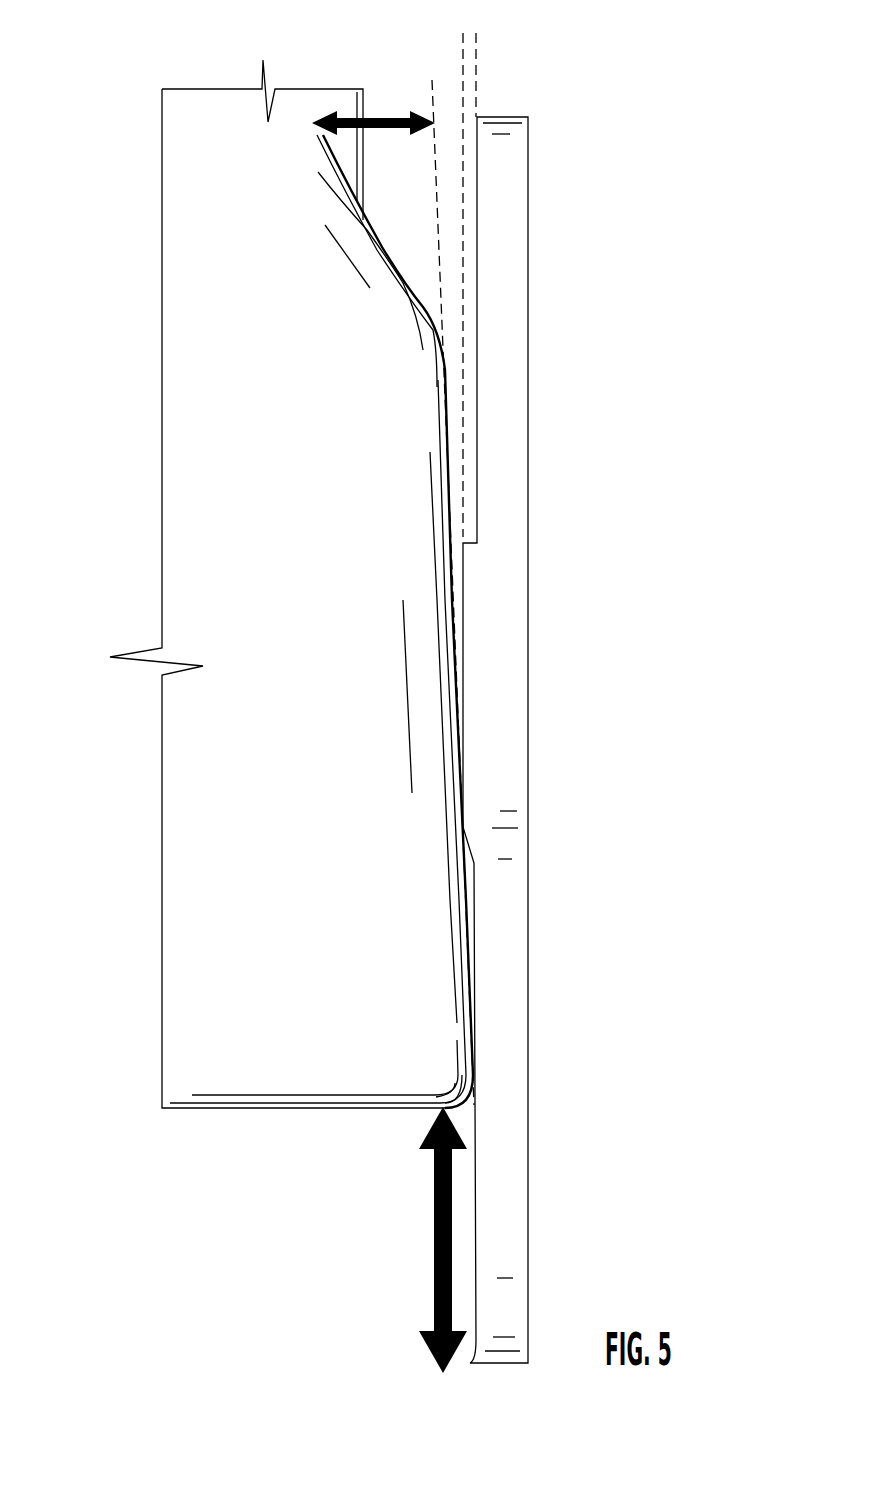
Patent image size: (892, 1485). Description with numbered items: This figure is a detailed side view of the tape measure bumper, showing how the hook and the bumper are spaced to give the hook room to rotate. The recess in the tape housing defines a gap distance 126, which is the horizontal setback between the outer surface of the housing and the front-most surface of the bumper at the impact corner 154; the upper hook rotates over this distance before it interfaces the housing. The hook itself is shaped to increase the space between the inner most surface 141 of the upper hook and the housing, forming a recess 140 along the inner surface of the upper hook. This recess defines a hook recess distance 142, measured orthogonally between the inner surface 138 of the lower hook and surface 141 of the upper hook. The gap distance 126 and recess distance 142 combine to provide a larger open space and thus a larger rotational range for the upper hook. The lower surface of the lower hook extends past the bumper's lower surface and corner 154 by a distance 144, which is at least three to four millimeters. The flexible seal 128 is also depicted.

The gap distance 126 is at (388, 110).
The flexible seal flap 128 is at (435, 188).
The inner surface of lower hook 138 is at (452, 556).
The recess 140 is at (484, 305).
The inner most surface of upper hook 141 is at (464, 247).
The hook recess distance 142 is at (413, 52).
The distance 144 is at (467, 1235).
The corner 154 is at (473, 1098).